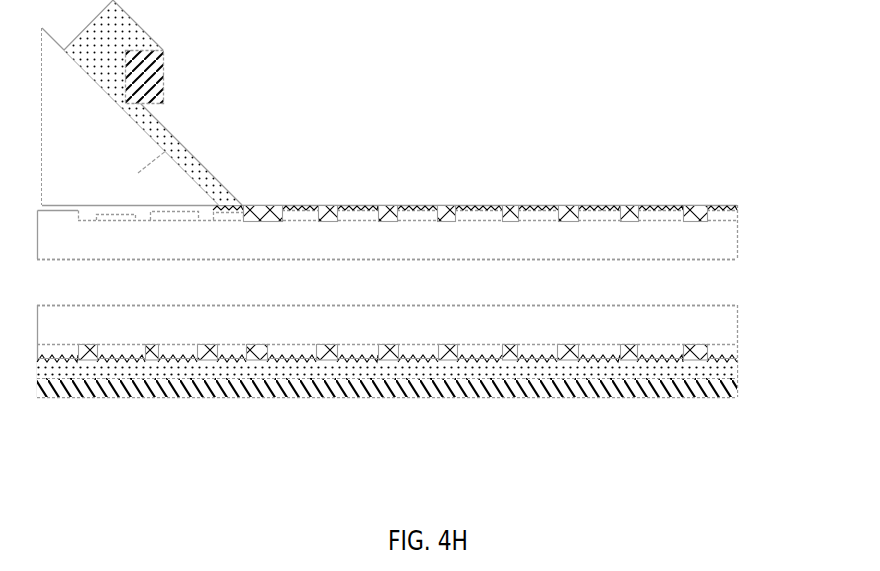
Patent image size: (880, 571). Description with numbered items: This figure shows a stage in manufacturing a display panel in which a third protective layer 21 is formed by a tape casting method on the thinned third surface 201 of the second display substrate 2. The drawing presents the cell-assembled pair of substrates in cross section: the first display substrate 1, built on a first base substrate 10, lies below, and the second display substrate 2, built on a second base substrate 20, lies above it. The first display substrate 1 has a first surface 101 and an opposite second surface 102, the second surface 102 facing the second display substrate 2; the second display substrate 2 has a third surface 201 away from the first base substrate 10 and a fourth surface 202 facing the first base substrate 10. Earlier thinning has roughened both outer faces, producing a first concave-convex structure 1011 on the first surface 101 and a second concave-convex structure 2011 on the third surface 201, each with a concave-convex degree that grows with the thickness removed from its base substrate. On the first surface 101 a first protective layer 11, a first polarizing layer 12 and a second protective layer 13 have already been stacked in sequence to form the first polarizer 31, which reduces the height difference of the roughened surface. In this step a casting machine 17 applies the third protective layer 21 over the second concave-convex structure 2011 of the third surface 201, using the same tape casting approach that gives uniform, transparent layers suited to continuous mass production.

The first display substrate 1 is at (742, 306).
The second display substrate 2 is at (742, 206).
The first base substrate 10 is at (455, 317).
The first protective layer 11 is at (512, 353).
The first polarizing layer 12 is at (437, 367).
The second protective layer 13 is at (355, 393).
The casting machine 17 is at (178, 137).
The second base substrate 20 is at (310, 248).
The third protective layer 21 is at (510, 210).
The first polarizer 31 is at (558, 426).
The first surface 101 is at (565, 352).
The second surface 102 is at (517, 307).
The third surface 201 is at (382, 222).
The fourth surface 202 is at (198, 259).
The first concave-convex structure 1011 is at (657, 352).
The second concave-convex structure 2011 is at (415, 210).